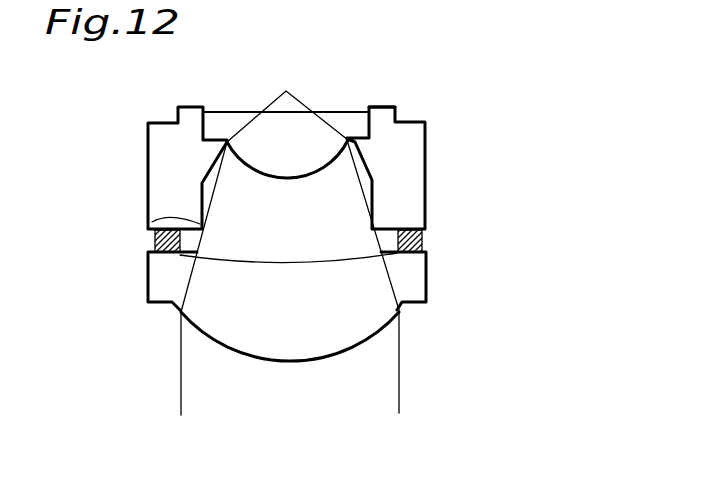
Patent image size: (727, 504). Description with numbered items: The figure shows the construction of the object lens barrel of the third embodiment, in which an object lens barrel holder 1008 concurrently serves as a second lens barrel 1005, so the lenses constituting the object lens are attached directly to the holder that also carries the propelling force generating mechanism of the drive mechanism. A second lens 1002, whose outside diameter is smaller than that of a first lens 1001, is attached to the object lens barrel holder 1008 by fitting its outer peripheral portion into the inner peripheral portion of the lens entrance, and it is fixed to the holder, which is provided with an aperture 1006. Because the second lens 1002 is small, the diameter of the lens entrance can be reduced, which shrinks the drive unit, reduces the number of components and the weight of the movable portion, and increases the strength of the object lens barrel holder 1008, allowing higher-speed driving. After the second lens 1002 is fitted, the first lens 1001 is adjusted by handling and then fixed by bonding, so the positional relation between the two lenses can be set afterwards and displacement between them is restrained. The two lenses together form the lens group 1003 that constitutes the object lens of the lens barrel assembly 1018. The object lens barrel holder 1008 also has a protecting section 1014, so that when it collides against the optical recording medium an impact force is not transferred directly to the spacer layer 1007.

The first lens 1001 is at (392, 427).
The second lens 1002 is at (300, 158).
The lens group 1003 is at (289, 291).
The second lens barrel 1005 is at (410, 155).
The aperture 1006 is at (152, 222).
The spacer layer 1007 is at (423, 240).
The object lens barrel holder 1008 is at (400, 168).
The protecting section 1014 is at (385, 107).
The lens unit 1018 is at (429, 323).